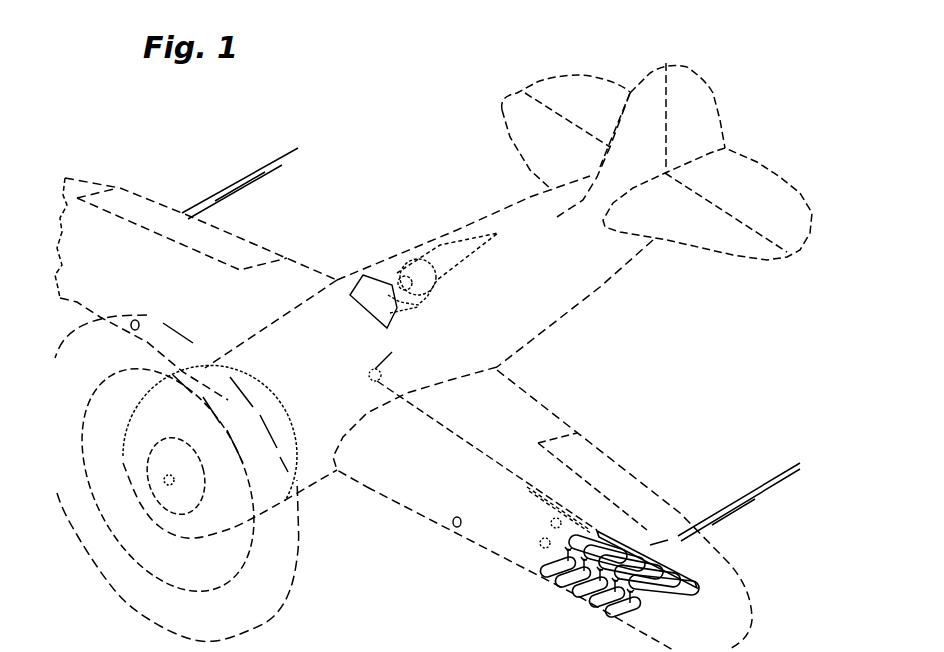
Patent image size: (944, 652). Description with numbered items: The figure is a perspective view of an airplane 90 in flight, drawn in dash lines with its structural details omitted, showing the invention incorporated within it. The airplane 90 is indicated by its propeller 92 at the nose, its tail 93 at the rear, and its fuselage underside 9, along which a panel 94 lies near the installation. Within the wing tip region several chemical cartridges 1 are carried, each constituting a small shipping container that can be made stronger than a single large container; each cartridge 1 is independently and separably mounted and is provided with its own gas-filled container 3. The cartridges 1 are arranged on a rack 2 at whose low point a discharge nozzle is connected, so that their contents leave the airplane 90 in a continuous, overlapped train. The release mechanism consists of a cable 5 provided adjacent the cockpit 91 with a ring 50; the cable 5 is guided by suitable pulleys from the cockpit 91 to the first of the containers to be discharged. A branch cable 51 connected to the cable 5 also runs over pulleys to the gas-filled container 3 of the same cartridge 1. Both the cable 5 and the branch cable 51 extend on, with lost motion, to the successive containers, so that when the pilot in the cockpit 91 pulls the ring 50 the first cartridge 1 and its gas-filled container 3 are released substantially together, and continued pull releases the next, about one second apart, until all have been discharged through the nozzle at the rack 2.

The cartridge 1 is at (653, 596).
The discharge nozzle 2 is at (658, 543).
The gas-filled container 3 is at (590, 603).
The cable 5 is at (467, 430).
The fuselage underside 9 is at (383, 477).
The ring 50 is at (392, 352).
The branch cable 51 is at (547, 550).
The airplane 90 is at (552, 317).
The cockpit 91 is at (420, 310).
The propeller 92 is at (118, 590).
The tail 93 is at (733, 245).
The bomb bay panel 94 is at (597, 457).